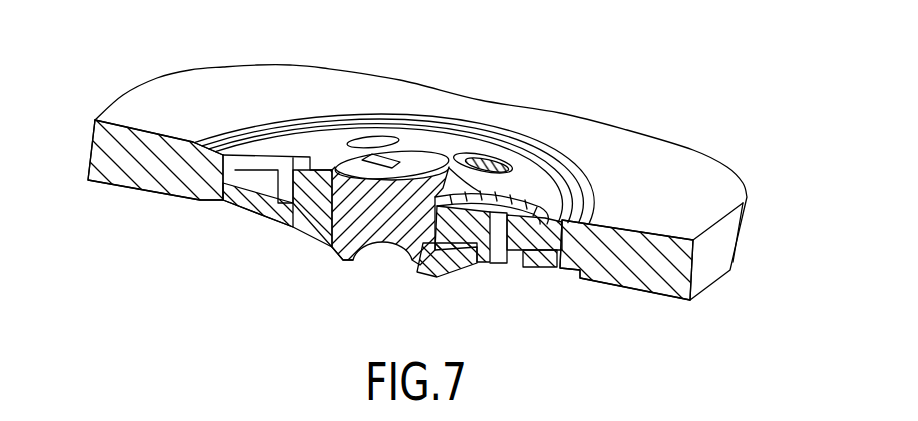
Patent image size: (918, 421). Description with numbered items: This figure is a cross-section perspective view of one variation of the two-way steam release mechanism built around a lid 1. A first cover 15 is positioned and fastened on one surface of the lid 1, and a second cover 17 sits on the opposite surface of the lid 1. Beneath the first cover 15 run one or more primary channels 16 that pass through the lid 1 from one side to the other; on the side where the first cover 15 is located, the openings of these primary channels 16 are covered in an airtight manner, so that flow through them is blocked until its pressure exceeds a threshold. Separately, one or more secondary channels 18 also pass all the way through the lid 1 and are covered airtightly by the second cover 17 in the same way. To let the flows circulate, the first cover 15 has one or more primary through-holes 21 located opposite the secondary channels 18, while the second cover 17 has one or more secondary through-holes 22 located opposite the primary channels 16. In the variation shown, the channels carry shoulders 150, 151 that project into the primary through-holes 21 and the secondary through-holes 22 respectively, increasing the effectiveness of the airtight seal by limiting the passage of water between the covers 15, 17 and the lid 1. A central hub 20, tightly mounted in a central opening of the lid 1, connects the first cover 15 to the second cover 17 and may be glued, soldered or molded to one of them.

The lid 1 is at (693, 246).
The first cover 15 is at (310, 237).
The primary channels 16 is at (268, 150).
The second cover 17 is at (392, 146).
The secondary channels 18 is at (512, 214).
The central hub 20 is at (470, 158).
The primary through-holes 21 is at (458, 271).
The secondary through-holes 22 is at (333, 150).
The shoulder 150 is at (304, 155).
The shoulder 151 is at (522, 264).